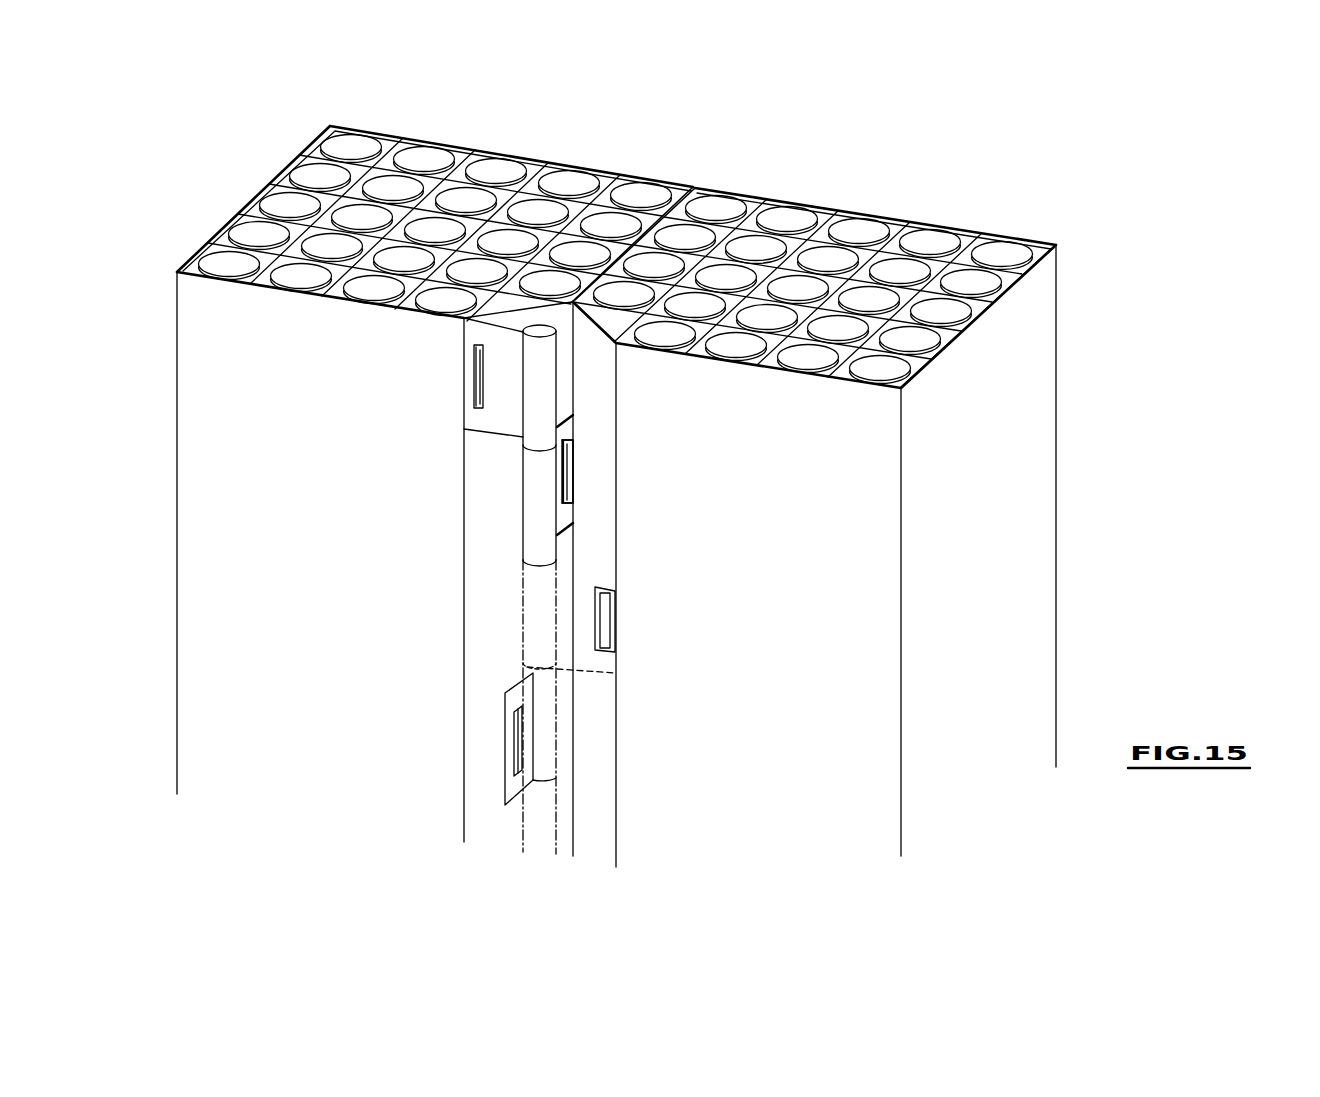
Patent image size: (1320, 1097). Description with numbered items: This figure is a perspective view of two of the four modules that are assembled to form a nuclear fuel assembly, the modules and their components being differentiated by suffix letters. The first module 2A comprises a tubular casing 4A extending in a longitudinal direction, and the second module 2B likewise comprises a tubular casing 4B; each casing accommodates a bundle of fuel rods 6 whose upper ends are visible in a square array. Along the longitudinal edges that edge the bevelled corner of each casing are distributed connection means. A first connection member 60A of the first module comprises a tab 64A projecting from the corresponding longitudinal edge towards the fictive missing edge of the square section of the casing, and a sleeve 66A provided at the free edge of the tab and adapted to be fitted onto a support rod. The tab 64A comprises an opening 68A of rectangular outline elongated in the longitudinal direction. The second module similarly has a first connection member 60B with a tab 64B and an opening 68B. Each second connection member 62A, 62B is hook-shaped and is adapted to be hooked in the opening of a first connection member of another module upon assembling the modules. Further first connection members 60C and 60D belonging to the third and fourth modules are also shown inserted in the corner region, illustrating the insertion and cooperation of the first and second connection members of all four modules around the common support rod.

The module 2A is at (312, 110).
The module 2B is at (1053, 191).
The tubular casing 4A is at (618, 161).
The tubular casing 4B is at (956, 220).
The fuel rods 6 is at (430, 160).
The first connection member 60A is at (454, 412).
The first connection member 60B is at (580, 517).
The first connection member 60C is at (590, 677).
The first connection member 60D is at (556, 750).
The second connection member 62A is at (581, 476).
The second connection member 62B is at (627, 628).
The tab 64A is at (465, 332).
The tab 64B is at (570, 426).
The sleeve 66A is at (535, 424).
The opening 68A is at (477, 385).
The opening 68B is at (560, 470).